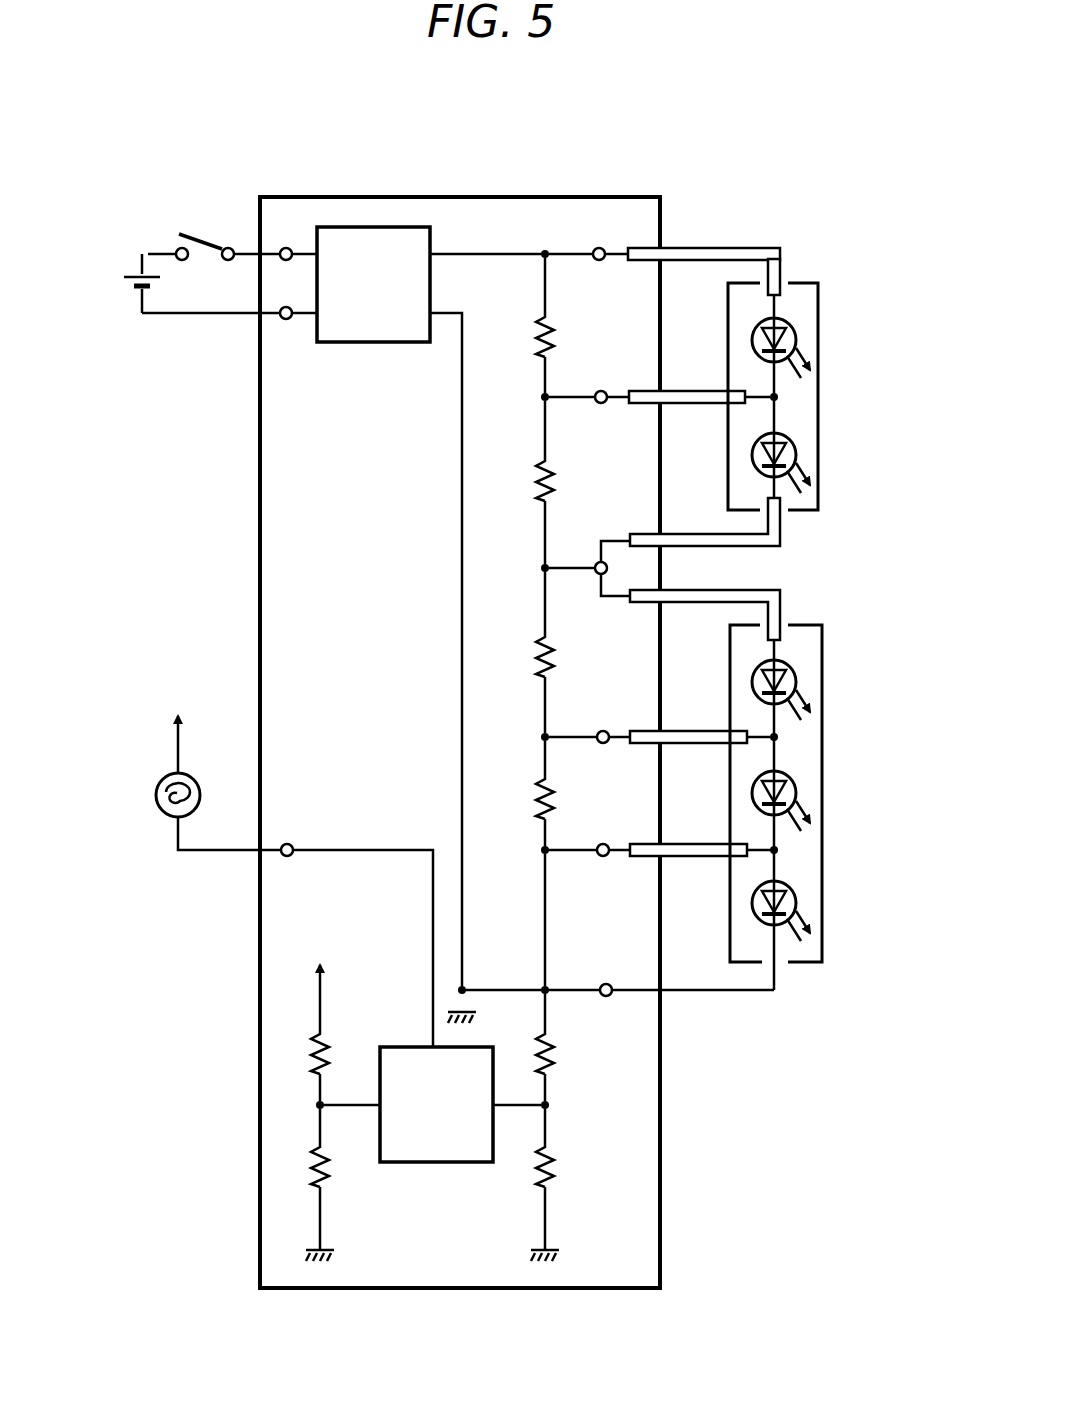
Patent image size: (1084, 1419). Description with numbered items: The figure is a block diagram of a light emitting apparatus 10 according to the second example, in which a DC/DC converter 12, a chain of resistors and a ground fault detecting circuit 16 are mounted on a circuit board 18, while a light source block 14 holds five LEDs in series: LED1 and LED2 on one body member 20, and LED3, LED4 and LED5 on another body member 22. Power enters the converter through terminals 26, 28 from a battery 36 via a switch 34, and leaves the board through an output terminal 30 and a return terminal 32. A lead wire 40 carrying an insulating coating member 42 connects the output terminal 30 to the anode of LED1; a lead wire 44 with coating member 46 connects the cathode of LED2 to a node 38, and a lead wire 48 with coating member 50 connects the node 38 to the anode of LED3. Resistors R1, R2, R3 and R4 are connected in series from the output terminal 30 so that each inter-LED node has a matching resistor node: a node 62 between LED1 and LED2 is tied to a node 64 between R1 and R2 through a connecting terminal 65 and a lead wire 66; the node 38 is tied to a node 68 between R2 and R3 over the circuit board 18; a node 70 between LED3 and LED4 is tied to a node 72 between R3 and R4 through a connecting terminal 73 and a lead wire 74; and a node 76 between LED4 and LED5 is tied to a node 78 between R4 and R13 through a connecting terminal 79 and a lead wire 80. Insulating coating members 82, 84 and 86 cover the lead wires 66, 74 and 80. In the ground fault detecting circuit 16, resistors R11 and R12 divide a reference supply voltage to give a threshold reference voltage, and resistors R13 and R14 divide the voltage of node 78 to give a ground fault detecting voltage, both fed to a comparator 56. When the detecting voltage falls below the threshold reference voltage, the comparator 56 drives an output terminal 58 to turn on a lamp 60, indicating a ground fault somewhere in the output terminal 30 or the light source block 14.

The light emitting apparatus 10 is at (460, 689).
The DC/DC converter 12 is at (370, 343).
The light source block 14 is at (818, 588).
The ground fault detecting circuit 16 is at (441, 1106).
The circuit board 18 is at (572, 197).
The body member 20 is at (818, 391).
The body member 22 is at (819, 801).
The input terminal 26 is at (286, 248).
The input terminal 28 is at (286, 320).
The output terminal 30 is at (599, 248).
The output terminal 32 is at (606, 984).
The switch 34 is at (211, 242).
The battery 36 is at (161, 286).
The node 38 is at (596, 563).
The lead wire 40 is at (697, 248).
The coating member 42 is at (738, 247).
The lead wire 44 is at (698, 535).
The coating member 46 is at (784, 540).
The lead wire 48 is at (694, 605).
The coating member 50 is at (784, 598).
The comparator 56 is at (405, 1045).
The output terminal 58 is at (289, 843).
The lamp 60 is at (200, 792).
The node 62 is at (779, 399).
The node 64 is at (538, 397).
The connecting terminal 65 is at (601, 391).
The lead wire 66 is at (694, 391).
The node 68 is at (538, 569).
The node 70 is at (779, 739).
The node 72 is at (538, 737).
The connecting terminal 73 is at (603, 731).
The lead wire 74 is at (696, 731).
The node 76 is at (779, 852).
The node 78 is at (540, 854).
The connecting terminal 79 is at (603, 844).
The lead wire 80 is at (696, 844).
The insulating coating member 82 is at (696, 404).
The insulating coating member 84 is at (696, 743).
The insulating coating member 86 is at (697, 856).
The resistor R1 is at (526, 335).
The resistor R2 is at (526, 479).
The resistor R3 is at (526, 655).
The resistor R4 is at (526, 797).
The resistor R11 is at (349, 1052).
The resistor R12 is at (349, 1165).
The resistor R13 is at (575, 1052).
The resistor R14 is at (575, 1165).
The LED LED1 is at (794, 346).
The LED LED2 is at (794, 461).
The LED LED3 is at (794, 688).
The LED LED4 is at (794, 799).
The LED LED5 is at (794, 909).